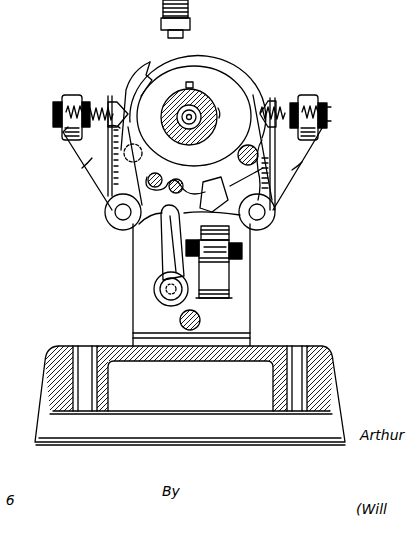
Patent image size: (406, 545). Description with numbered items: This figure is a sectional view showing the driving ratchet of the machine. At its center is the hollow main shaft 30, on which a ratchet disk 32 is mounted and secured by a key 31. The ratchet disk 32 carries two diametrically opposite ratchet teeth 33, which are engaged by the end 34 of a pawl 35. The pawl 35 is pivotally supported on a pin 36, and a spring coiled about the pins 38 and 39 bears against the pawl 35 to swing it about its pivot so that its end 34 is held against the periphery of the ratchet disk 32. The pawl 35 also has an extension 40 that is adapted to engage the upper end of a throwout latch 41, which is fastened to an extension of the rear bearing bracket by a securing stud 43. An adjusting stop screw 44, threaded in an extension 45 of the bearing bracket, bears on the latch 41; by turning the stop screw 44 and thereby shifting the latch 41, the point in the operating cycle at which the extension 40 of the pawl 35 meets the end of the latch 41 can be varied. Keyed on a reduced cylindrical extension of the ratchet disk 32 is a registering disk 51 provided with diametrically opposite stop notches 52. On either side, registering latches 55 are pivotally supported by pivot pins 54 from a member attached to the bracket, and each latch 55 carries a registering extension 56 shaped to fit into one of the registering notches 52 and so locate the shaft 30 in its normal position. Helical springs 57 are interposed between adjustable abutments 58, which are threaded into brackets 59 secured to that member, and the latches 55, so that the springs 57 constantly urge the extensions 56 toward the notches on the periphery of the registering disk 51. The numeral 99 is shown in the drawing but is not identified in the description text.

The adjusting screw 99 is at (190, 6).
The registering disk 51 is at (216, 64).
The key 31 is at (192, 84).
The main shaft 30 is at (222, 110).
The ratchet teeth 33 is at (152, 78).
The ratchet disk 32 is at (247, 92).
The registering extensions 56 is at (96, 95).
The stop notches 52 is at (112, 98).
The end of pawl 34 is at (280, 97).
The brackets 59 is at (62, 97).
The adjustable abutments 58 is at (62, 126).
The pawl 35 is at (327, 112).
The helical springs 57 is at (108, 166).
The registering latches 55 is at (82, 168).
The pin 36 is at (292, 171).
The pivot pins 54 is at (116, 215).
The pin 38 is at (133, 183).
The pin 39 is at (210, 194).
The extension of pawl 40 is at (252, 228).
The throwout latch 41 is at (168, 265).
The securing stud 43 is at (155, 300).
The extension of bearing bracket 45 is at (218, 284).
The adjusting stop screw 44 is at (242, 256).